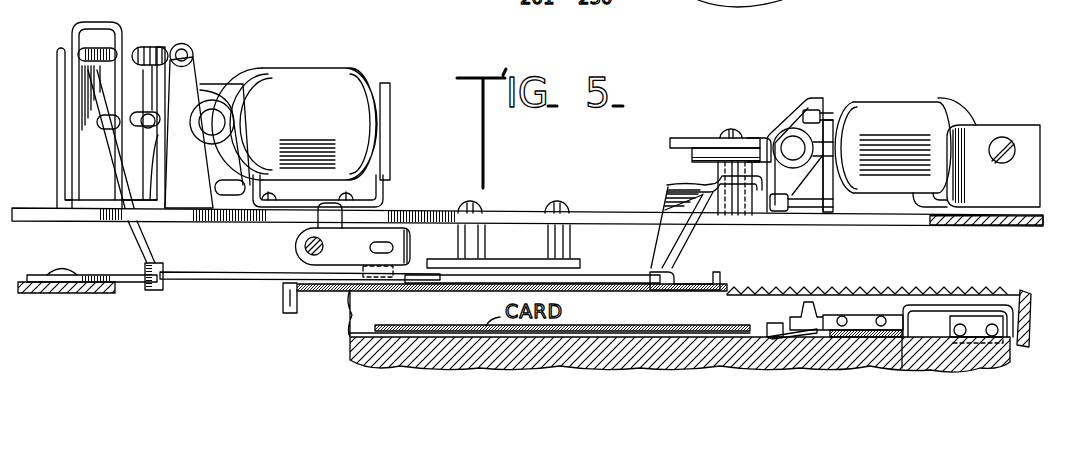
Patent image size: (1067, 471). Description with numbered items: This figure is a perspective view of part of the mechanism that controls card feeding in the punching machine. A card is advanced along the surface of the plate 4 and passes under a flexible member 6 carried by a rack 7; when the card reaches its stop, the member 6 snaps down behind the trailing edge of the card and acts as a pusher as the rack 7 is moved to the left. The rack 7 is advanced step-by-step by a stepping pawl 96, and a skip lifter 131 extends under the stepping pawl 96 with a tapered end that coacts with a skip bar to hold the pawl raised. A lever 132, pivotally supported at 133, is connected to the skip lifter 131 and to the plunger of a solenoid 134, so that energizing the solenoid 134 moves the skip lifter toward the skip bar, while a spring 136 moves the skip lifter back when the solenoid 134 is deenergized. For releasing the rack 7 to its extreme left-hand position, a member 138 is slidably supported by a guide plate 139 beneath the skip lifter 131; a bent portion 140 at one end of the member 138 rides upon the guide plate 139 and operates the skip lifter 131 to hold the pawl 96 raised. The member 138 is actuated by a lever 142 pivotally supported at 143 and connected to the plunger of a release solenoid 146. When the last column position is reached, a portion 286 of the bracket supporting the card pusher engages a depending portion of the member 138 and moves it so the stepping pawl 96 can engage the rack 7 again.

The pivot 133 is at (98, 50).
The spring 136 is at (157, 47).
The solenoid 134 is at (306, 72).
The lever 132 is at (157, 246).
The skip lifter 131 is at (262, 271).
The stepping pawl 96 is at (410, 246).
The bent portion 140 is at (282, 302).
The member 138 is at (600, 275).
The lever 142 is at (667, 205).
The guide plate 139 is at (690, 273).
The pivot 143 is at (727, 137).
The release solenoid 146 is at (908, 110).
The portion of the bracket 286 is at (800, 304).
The flexible member 6 is at (766, 326).
The rack 7 is at (1024, 300).
The plate 4 is at (797, 370).